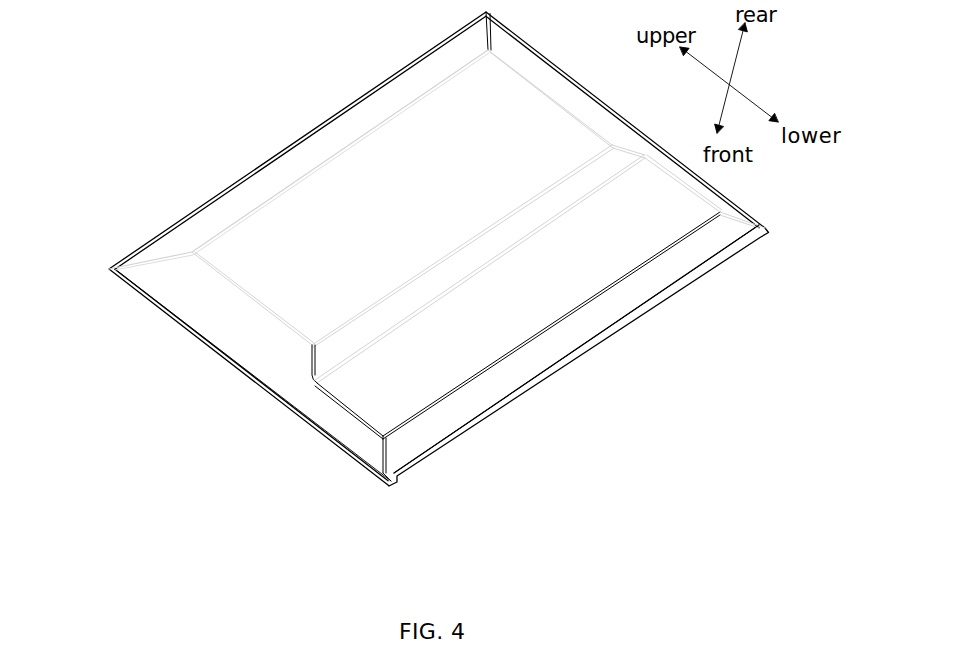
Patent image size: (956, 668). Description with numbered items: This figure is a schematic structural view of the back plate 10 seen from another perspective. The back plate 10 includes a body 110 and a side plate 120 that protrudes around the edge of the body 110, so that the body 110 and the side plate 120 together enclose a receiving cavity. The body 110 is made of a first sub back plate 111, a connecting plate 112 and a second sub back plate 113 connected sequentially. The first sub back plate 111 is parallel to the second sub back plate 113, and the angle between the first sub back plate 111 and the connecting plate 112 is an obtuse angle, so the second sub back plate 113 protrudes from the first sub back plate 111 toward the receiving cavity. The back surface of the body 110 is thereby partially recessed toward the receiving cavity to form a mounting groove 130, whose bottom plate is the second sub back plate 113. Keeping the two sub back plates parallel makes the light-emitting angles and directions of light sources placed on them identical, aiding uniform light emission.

The back plate 10 is at (265, 159).
The body 110 is at (418, 275).
The first sub back plate 111 is at (291, 292).
The connecting plate 112 is at (328, 358).
The second sub back plate 113 is at (478, 318).
The side plate 120 is at (206, 225).
The mounting groove 130 is at (537, 282).